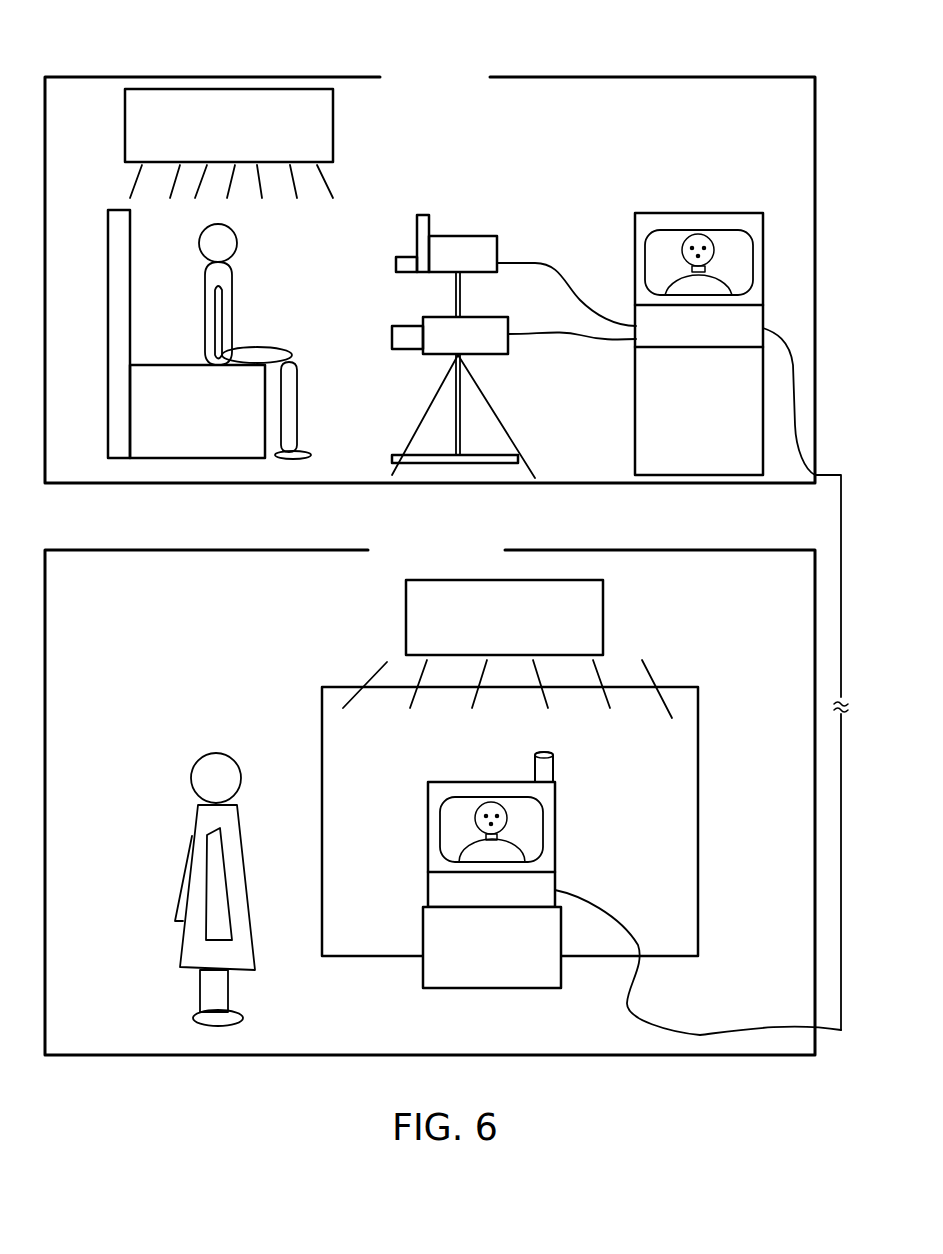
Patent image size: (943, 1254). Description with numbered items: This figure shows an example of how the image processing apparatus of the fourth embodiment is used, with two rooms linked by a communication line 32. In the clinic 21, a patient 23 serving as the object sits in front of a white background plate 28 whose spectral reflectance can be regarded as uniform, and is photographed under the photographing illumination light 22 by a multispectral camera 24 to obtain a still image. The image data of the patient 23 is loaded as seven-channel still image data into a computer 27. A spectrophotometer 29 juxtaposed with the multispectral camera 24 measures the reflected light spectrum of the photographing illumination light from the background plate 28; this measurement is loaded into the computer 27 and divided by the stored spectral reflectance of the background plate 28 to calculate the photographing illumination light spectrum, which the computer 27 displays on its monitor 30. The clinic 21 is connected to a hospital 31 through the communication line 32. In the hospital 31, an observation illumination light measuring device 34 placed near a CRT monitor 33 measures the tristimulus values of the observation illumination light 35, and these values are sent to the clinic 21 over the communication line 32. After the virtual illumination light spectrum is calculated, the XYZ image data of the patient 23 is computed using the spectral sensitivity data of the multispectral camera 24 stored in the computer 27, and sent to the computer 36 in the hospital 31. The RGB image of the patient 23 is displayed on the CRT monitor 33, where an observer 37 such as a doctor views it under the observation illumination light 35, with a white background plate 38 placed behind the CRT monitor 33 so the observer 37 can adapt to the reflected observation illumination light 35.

The clinic 21 is at (631, 76).
The photographing illumination light 22 is at (334, 120).
The patient 23 is at (233, 305).
The multispectral camera 24 is at (473, 236).
The computer 27 is at (763, 318).
The white background plate 28 is at (106, 297).
The spectrophotometer 29 is at (490, 355).
The monitor 30 is at (708, 213).
The hospital 31 is at (660, 548).
The communication line 32 is at (838, 530).
The CRT monitor 33 is at (556, 812).
The observation illumination light measuring device 34 is at (556, 763).
The observation illumination light 35 is at (604, 598).
The computer 36 is at (556, 885).
The observer 37 is at (180, 950).
The white background plate 38 is at (700, 822).